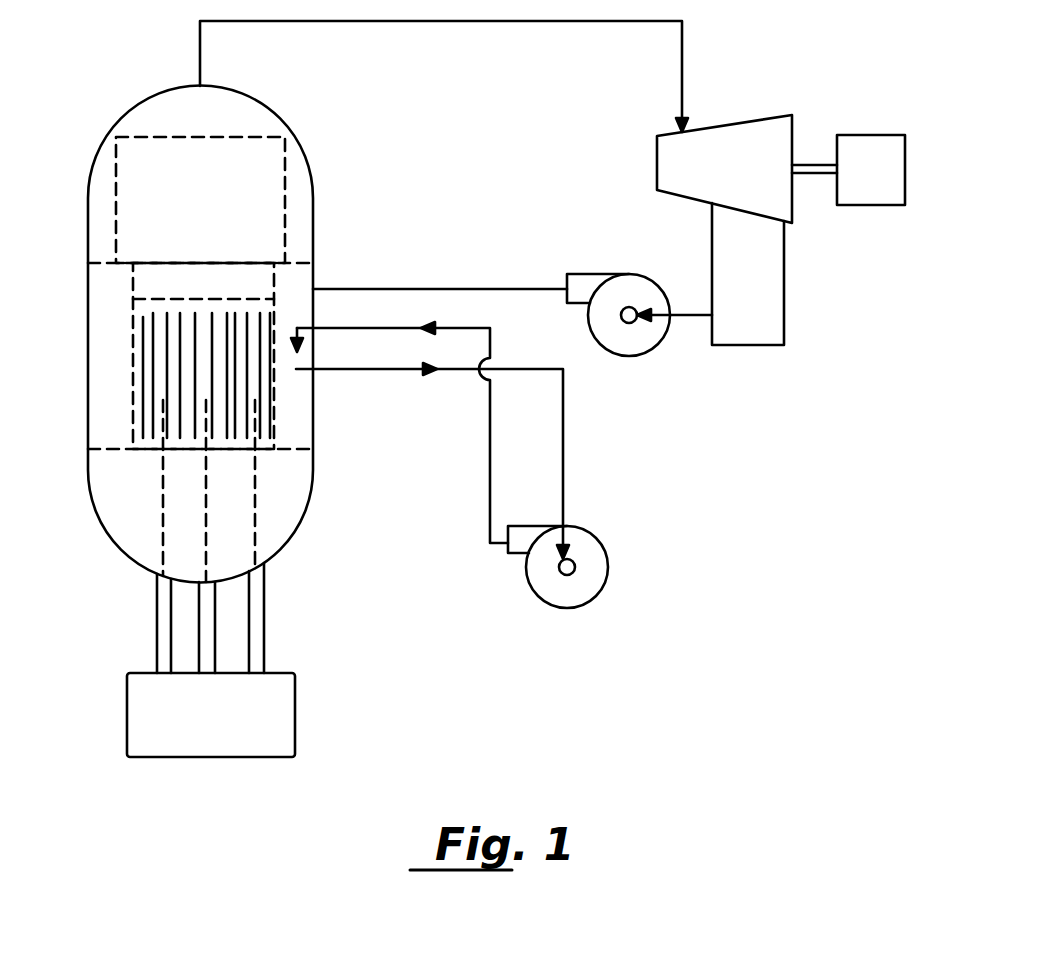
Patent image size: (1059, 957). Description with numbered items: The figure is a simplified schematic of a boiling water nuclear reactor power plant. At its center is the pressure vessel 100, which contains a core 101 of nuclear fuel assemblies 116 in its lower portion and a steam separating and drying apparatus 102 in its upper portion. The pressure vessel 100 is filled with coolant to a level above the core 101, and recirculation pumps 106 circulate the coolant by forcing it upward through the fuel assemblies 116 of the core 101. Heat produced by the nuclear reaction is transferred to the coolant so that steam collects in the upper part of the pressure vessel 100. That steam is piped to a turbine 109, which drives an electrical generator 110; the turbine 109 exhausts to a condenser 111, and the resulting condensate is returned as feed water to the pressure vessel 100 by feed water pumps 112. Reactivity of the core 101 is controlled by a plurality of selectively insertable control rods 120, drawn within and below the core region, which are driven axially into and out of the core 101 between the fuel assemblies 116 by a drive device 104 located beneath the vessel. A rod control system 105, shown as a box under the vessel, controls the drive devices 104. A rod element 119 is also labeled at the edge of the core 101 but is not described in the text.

The pressure vessel 100 is at (312, 170).
The core 101 is at (133, 342).
The steam separating and drying apparatus 102 is at (116, 190).
The drive device 104 is at (263, 612).
The rod control system 105 is at (127, 688).
The recirculation pumps 106 is at (598, 552).
The turbine 109 is at (733, 120).
The electrical generator 110 is at (867, 147).
The condenser 111 is at (784, 298).
The feed water pumps 112 is at (645, 340).
The fuel assemblies 116 is at (143, 385).
The fuel rod / instrumentation 119 is at (143, 317).
The control rods 120 is at (163, 500).